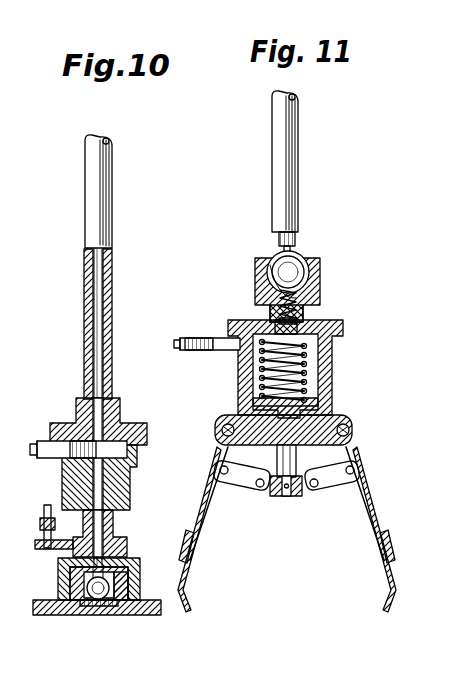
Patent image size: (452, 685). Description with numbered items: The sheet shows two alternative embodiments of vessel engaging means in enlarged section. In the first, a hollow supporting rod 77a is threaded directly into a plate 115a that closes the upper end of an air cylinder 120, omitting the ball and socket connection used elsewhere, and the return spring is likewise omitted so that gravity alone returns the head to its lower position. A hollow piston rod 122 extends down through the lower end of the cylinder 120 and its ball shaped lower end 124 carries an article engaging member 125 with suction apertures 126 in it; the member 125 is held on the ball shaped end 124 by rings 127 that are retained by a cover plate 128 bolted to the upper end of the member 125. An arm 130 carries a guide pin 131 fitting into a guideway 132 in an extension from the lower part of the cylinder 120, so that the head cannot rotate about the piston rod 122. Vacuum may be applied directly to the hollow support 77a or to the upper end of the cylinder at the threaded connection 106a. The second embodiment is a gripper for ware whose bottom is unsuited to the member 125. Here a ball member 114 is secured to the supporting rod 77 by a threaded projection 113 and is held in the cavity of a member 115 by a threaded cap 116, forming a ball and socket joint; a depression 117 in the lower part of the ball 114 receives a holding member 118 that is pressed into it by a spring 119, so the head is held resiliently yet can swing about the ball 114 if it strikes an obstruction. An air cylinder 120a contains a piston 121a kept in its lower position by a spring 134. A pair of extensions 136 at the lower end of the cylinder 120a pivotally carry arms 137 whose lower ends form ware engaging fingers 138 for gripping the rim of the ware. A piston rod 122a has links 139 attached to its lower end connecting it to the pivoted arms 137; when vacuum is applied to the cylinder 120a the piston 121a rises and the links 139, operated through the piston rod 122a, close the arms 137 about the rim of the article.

In FIG. 11, the supporting rod 77 is at (298, 152).
In FIG. 10, the supporting rod 77a is at (113, 216).
In FIG. 10, the threaded connection of suction conduit 106a is at (40, 452).
In FIG. 11, the threaded connection of suction conduit 106a is at (182, 344).
In FIG. 11, the threaded projection 113 is at (292, 250).
In FIG. 11, the ball member 114 is at (300, 257).
In FIG. 11, the member 115 is at (268, 318).
In FIG. 10, the plate 115a is at (119, 414).
In FIG. 11, the threaded cap 116 is at (318, 268).
In FIG. 11, the depression 117 is at (262, 284).
In FIG. 11, the holding member 118 is at (300, 300).
In FIG. 11, the spring 119 is at (297, 311).
In FIG. 10, the air cylinder 120 is at (133, 482).
In FIG. 11, the air cylinder 120a is at (337, 362).
In FIG. 11, the piston 121a is at (320, 400).
In FIG. 10, the hollow piston rod 122 is at (112, 530).
In FIG. 11, the piston rod 122a is at (283, 462).
In FIG. 10, the ball shaped lower end 124 is at (118, 588).
In FIG. 10, the article engaging member 125 is at (68, 617).
In FIG. 10, the suction apertures 126 is at (104, 618).
In FIG. 10, the rings 127 is at (70, 598).
In FIG. 10, the cover plate 128 is at (61, 569).
In FIG. 10, the arm 130 is at (45, 545).
In FIG. 10, the guide pin 131 is at (46, 516).
In FIG. 10, the guideway 132 is at (41, 524).
In FIG. 11, the spring 134 is at (306, 348).
In FIG. 11, the extensions 136 is at (345, 425).
In FIG. 11, the arms 137 is at (352, 473).
In FIG. 11, the ware engaging fingers 138 is at (388, 600).
In FIG. 11, the links 139 is at (322, 497).